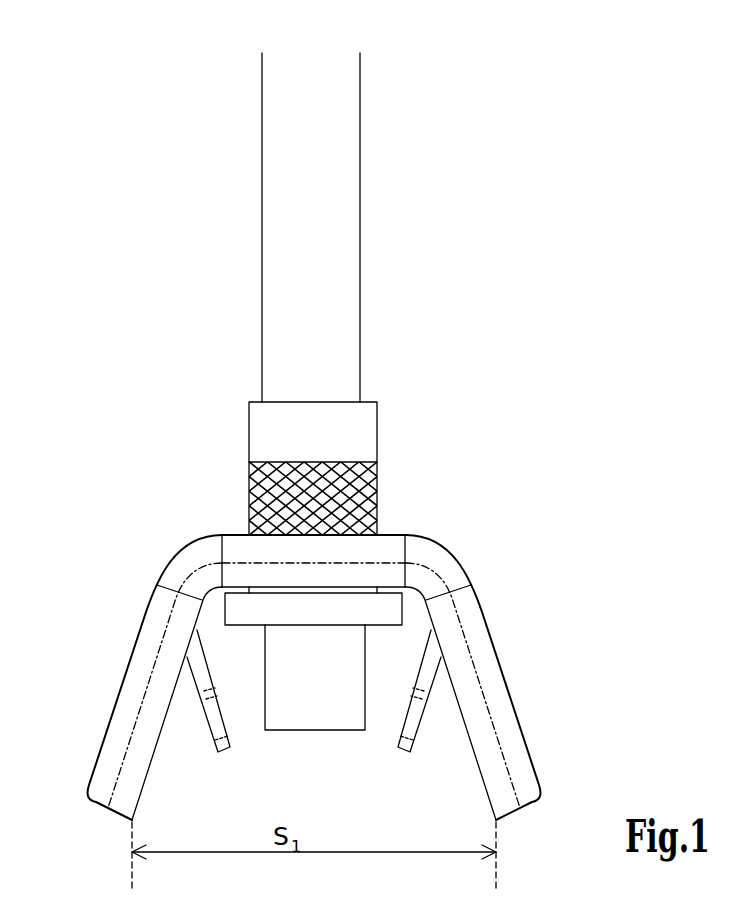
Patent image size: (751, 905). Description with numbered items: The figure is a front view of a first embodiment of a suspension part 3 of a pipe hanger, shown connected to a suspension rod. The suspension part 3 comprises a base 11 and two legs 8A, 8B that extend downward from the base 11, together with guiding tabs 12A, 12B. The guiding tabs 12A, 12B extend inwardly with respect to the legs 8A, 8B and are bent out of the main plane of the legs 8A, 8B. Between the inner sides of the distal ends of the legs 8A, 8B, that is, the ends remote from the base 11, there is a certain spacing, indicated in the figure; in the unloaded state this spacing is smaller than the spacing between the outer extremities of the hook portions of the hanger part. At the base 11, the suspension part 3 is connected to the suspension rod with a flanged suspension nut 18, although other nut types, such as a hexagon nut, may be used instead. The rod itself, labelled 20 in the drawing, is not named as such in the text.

The shaft 20 is at (328, 225).
The flanged suspension nut 18 is at (343, 440).
The base 11 is at (388, 548).
The suspension part 3 is at (328, 651).
The leg 8A is at (485, 665).
The leg 8B is at (150, 650).
The guiding tab 12A is at (412, 720).
The guiding tab 12B is at (212, 717).